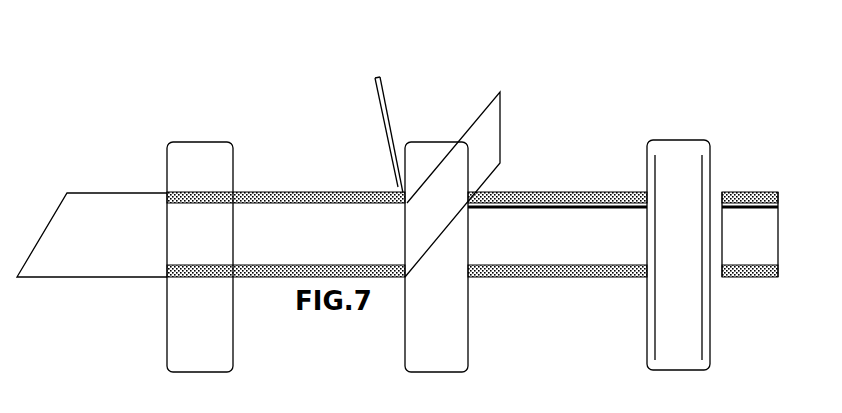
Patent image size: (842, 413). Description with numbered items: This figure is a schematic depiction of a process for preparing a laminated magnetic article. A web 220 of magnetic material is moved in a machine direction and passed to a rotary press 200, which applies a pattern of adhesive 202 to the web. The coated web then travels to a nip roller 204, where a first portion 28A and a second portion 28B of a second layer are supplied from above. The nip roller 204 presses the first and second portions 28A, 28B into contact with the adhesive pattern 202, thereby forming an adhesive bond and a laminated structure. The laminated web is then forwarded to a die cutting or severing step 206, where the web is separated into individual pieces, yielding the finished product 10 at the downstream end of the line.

The substrate 10 is at (750, 233).
The first portion of second layer 28A is at (377, 75).
The second portion of second layer 28B is at (500, 92).
The rotary press 200 is at (200, 140).
The pattern of adhesive 202 is at (198, 190).
The nip roller 204 is at (437, 140).
The die cutting or severing step 206 is at (680, 135).
The web of magnetic material 220 is at (117, 240).